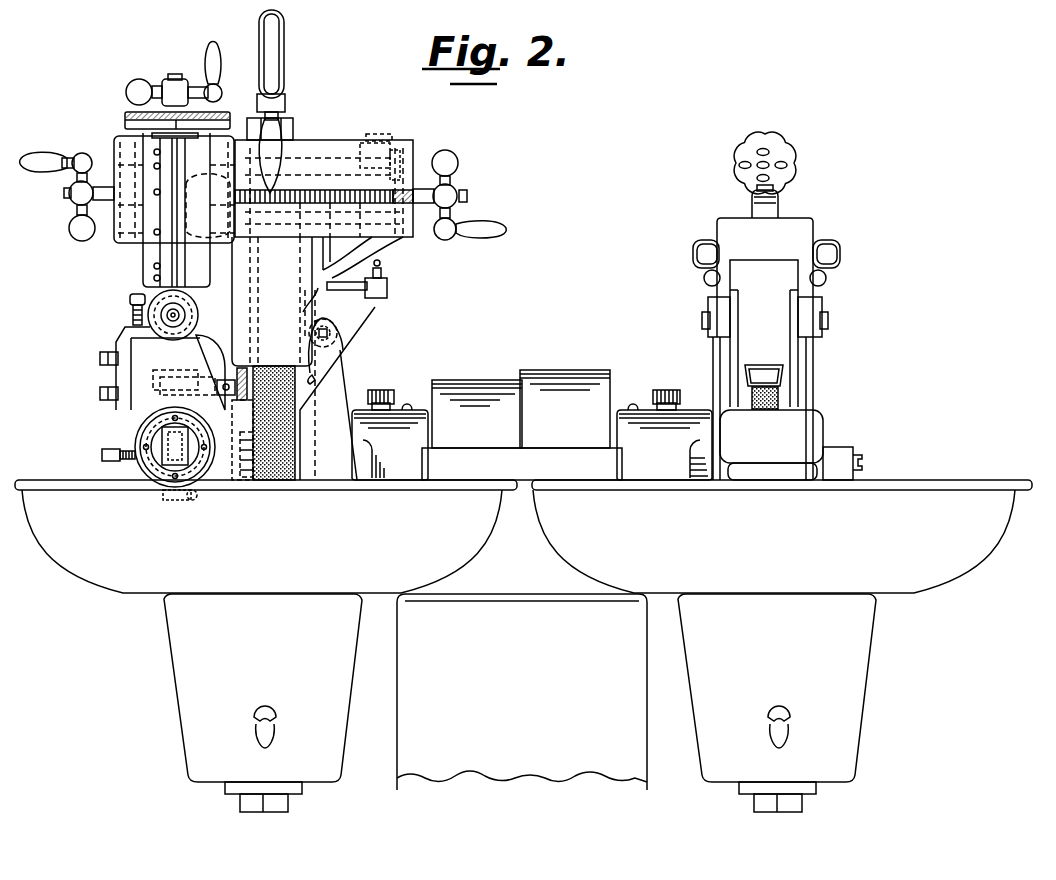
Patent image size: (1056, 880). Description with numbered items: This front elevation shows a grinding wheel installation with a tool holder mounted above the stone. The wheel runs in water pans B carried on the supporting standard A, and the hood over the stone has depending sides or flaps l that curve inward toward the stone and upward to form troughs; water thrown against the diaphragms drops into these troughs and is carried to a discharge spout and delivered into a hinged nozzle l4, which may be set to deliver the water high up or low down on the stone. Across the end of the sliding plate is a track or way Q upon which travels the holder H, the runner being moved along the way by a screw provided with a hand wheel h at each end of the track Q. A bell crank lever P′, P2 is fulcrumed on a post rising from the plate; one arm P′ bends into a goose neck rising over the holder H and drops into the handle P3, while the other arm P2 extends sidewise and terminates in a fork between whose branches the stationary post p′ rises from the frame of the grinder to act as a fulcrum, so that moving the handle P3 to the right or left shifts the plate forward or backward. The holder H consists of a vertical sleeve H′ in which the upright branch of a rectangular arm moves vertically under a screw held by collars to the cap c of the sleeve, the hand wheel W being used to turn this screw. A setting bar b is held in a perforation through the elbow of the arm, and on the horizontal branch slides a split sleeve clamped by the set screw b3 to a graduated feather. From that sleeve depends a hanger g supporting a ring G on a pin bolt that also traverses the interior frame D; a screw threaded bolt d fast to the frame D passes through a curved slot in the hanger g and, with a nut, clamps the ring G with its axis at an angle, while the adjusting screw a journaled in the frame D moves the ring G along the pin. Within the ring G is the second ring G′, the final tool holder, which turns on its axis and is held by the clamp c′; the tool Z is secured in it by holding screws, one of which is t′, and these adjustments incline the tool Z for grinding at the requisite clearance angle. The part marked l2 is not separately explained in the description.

The hand wheel W is at (174, 74).
The cap c is at (226, 111).
The bell crank lever P′ is at (274, 22).
The track or way Q is at (305, 152).
The bell crank lever arm P2 is at (340, 162).
The stationary post p′ is at (398, 144).
The hand wheel h is at (263, 195).
The holder H is at (152, 164).
The vertical sleeve H′ is at (152, 263).
The pivot l2 is at (152, 231).
The handle P3 is at (276, 198).
The depending sides or flaps l is at (333, 305).
The hinged nozzle l4 is at (319, 369).
The set screw b3 is at (128, 300).
The interior frame D is at (138, 352).
The screw threaded bolt d is at (100, 358).
The hanger g is at (120, 368).
The adjusting screw a is at (120, 393).
The ring G is at (137, 428).
The holding screw t′ is at (102, 454).
The tool Z is at (160, 480).
The clamp c′ is at (216, 494).
The second ring G′ is at (212, 480).
The water pans B is at (260, 638).
The supporting standard A is at (522, 692).
The setting bar b is at (777, 306).